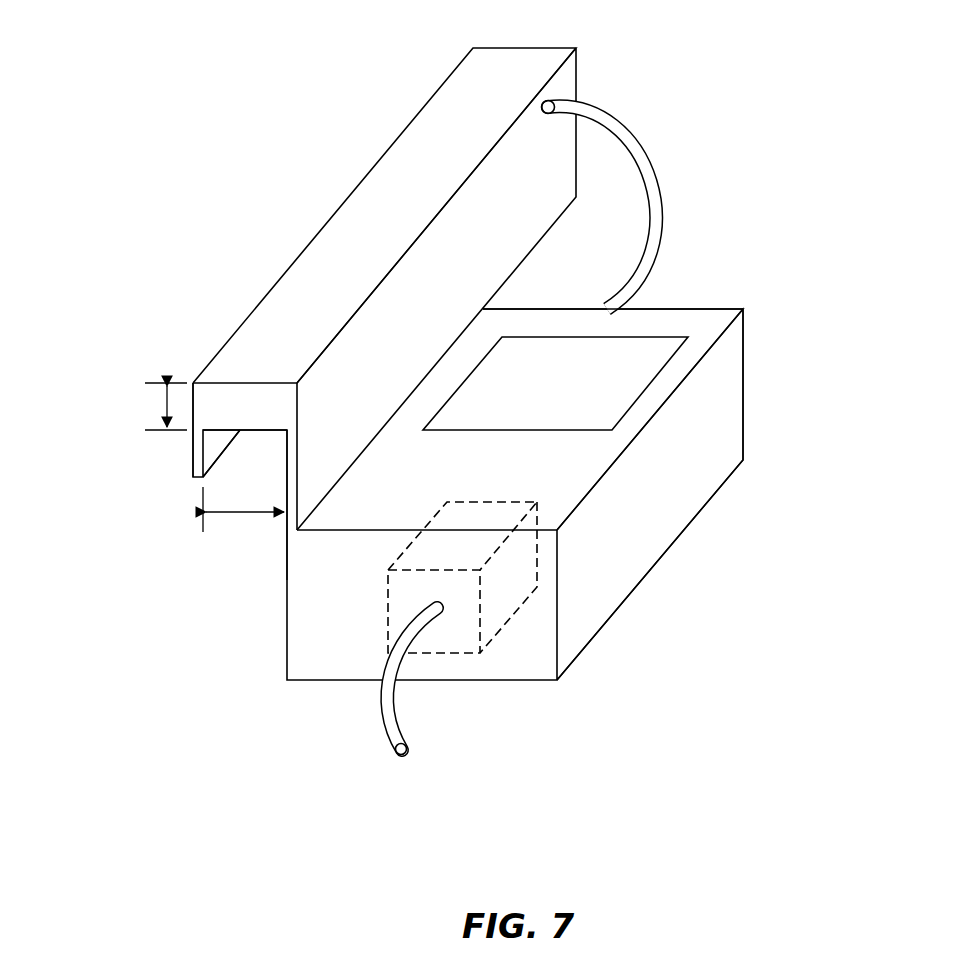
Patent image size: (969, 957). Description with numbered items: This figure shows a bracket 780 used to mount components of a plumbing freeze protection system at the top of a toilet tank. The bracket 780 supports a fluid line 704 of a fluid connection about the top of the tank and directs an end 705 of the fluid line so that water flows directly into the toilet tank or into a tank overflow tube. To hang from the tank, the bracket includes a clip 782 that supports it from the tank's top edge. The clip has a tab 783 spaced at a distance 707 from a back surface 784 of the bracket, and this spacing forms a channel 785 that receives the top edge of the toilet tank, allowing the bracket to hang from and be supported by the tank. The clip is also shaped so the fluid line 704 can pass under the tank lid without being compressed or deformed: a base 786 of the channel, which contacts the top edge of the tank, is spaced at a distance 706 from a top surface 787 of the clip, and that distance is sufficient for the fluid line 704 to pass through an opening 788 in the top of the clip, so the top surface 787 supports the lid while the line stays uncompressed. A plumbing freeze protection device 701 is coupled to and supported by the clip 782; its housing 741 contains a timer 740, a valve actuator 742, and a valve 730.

The bracket 780 is at (265, 53).
The clip 782 is at (312, 197).
The top surface of the clip 787 is at (343, 296).
The back surface of the bracket 784 is at (267, 430).
The base of the channel 786 is at (287, 483).
The tab 783 is at (193, 442).
The channel 785 is at (236, 461).
The distance 706 is at (162, 407).
The distance 707 is at (253, 517).
The plumbing freeze protection device 701 is at (766, 361).
The housing 741 is at (632, 505).
The timer 740 is at (632, 353).
The valve 730 is at (486, 625).
The valve actuator 742 is at (500, 607).
The end of the fluid line 705 is at (397, 755).
The fluid line 704 is at (660, 200).
The opening 788 is at (547, 100).